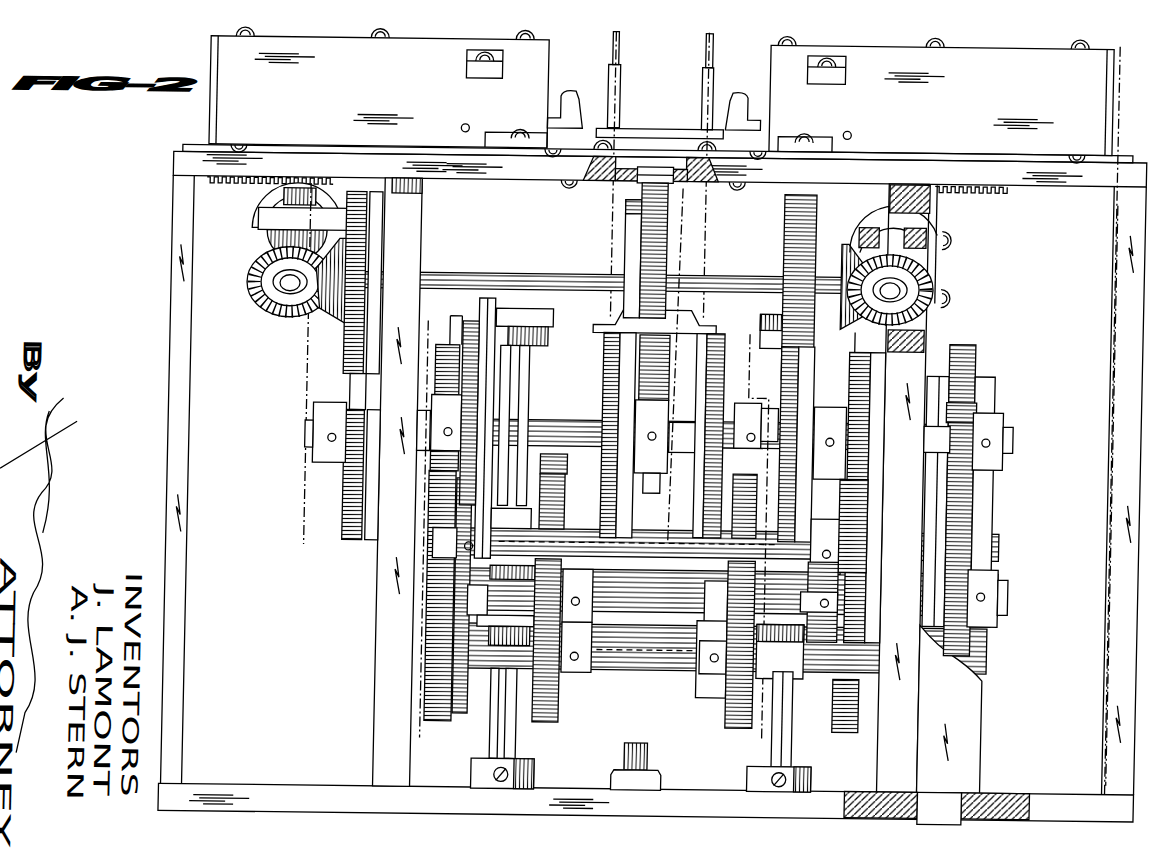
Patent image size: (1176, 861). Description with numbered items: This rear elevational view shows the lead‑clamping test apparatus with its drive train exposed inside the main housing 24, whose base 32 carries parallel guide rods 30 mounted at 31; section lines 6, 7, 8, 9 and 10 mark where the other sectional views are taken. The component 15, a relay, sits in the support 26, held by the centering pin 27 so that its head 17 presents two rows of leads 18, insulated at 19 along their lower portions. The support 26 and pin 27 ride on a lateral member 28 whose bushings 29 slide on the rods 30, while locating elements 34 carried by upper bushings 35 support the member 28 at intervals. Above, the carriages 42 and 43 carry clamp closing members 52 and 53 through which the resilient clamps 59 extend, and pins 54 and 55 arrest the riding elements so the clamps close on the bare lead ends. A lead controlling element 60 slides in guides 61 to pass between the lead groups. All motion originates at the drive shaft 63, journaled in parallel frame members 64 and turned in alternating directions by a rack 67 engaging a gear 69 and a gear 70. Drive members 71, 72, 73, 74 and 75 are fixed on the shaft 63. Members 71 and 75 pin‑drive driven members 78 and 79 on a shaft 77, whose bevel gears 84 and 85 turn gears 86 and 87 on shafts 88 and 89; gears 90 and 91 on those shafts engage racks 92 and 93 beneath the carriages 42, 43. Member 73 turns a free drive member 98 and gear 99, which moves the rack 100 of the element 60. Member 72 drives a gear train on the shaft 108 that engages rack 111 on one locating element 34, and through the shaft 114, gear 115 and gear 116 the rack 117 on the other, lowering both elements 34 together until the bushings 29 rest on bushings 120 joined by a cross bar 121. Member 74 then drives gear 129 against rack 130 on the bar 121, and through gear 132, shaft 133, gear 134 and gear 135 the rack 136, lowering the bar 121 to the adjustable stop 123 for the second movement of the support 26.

The section line 6— 6 is at (1115, 57).
The section line 7— 7 is at (424, 331).
The section line 8— 8 is at (681, 196).
The section line 9— 9 is at (750, 337).
The section line 10— 10 is at (304, 224).
The component 15 is at (629, 121).
The head 17 is at (657, 131).
The leads 18 is at (706, 52).
The insulating material 19 is at (706, 88).
The main housing 24 is at (1122, 390).
The support 26 is at (672, 337).
The centering pin 27 is at (680, 162).
The lateral member 28 is at (680, 570).
The bushings 29 is at (526, 527).
The guide rods 30 is at (517, 740).
The rod mounting 31 is at (477, 774).
The base 32 is at (581, 792).
The locating elements 34 is at (447, 319).
The bushings 35 is at (550, 335).
The carriage 42 is at (204, 128).
The carriage 43 is at (1088, 97).
The clamp closing member 52 is at (472, 70).
The clamp closing member 53 is at (838, 78).
The pin 54 is at (513, 137).
The pin 55 is at (789, 135).
The resilient clamps 59 is at (563, 95).
The lead controlling element 60 is at (628, 168).
The guides 61 is at (584, 163).
The drive shaft 63 is at (1004, 441).
The frame members 64 is at (379, 604).
The rack 67 is at (960, 353).
The gear 69 is at (968, 525).
The gear 70 is at (967, 405).
The drive member 71 is at (349, 490).
The drive member 72 is at (493, 371).
The drive member 73 is at (612, 415).
The drive member 74 is at (712, 393).
The drive member 75 is at (803, 388).
The shaft 77 is at (437, 266).
The driven member 78 is at (377, 247).
The driven member 79 is at (797, 220).
The bevel gear 84 is at (333, 322).
The bevel gear 85 is at (848, 262).
The gear 86 is at (262, 285).
The gear 87 is at (930, 287).
The shaft 88 is at (288, 298).
The shaft 89 is at (890, 338).
The gear 90 is at (251, 216).
The gear 91 is at (858, 202).
The rack 92 is at (243, 194).
The rack 93 is at (985, 194).
The drive member 98 is at (636, 248).
The gear 99 is at (662, 218).
The rack 100 is at (646, 181).
The shaft 108 is at (421, 598).
The rack 111 is at (430, 376).
The shaft 114 is at (641, 543).
The gear 115 is at (872, 492).
The gear 116 is at (837, 688).
The rack 117 is at (870, 389).
The bushings 120 is at (486, 637).
The cross bar 121 is at (637, 628).
The adjustable stop 123 is at (649, 753).
The gear 129 is at (740, 527).
The rack 130 is at (748, 465).
The gear 132 is at (730, 722).
The shaft 133 is at (670, 661).
The gear 134 is at (565, 707).
The gear 135 is at (556, 503).
The rack 136 is at (567, 463).